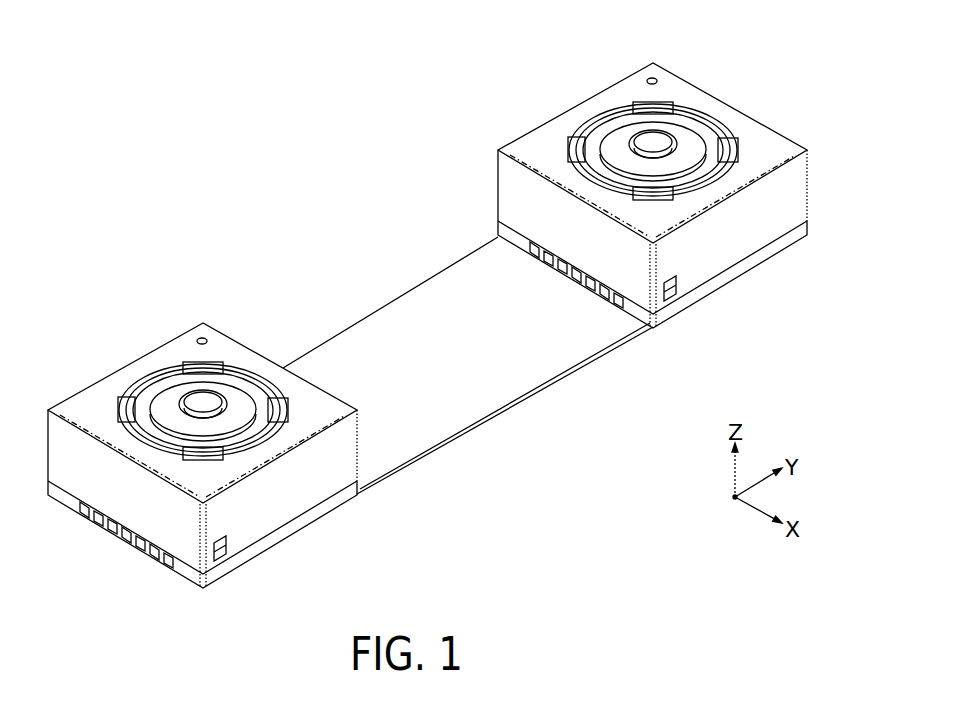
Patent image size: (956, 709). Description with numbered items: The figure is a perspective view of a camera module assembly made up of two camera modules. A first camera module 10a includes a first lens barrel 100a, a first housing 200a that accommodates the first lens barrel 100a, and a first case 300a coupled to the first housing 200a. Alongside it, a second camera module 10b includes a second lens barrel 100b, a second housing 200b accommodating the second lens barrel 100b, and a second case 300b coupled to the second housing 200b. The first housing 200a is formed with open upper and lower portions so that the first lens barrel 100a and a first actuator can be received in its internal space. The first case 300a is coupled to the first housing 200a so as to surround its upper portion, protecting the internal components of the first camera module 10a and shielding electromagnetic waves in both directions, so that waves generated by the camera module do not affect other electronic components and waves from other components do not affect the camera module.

The first camera module 10a is at (350, 412).
The second camera module 10b is at (680, 164).
The first lens barrel 100a is at (172, 397).
The second lens barrel 100b is at (623, 135).
The first housing 200a is at (328, 507).
The second housing 200b is at (773, 250).
The first case 300a is at (93, 403).
The second case 300b is at (545, 145).